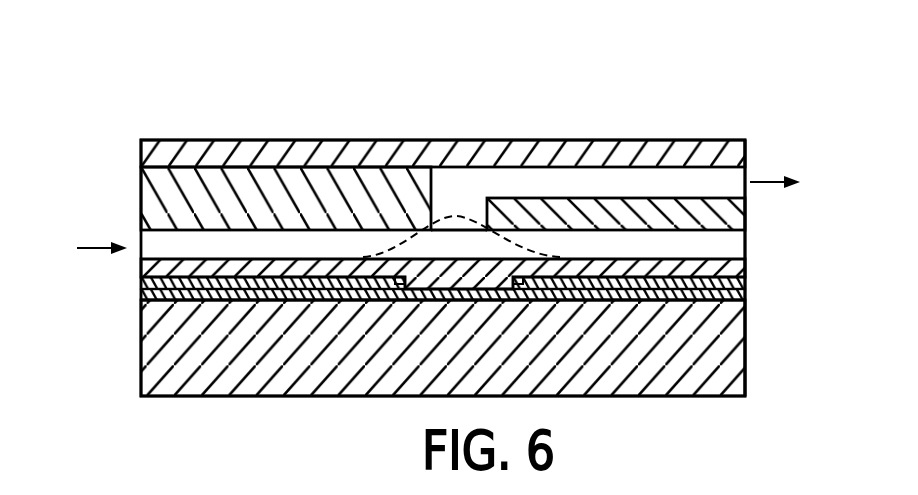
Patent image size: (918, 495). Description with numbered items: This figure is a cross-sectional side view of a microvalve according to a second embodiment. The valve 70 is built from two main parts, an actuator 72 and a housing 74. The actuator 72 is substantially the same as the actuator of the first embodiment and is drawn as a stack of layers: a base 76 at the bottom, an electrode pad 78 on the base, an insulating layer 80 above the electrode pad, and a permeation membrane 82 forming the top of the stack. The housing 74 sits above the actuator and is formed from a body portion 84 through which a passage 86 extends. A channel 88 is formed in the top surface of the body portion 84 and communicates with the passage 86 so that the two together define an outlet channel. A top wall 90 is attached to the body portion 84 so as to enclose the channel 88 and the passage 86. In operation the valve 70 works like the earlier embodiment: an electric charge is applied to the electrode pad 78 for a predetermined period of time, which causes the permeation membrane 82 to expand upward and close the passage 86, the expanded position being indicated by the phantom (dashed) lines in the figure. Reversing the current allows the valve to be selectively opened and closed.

The valve 70 is at (660, 94).
The actuator 72 is at (772, 303).
The housing 74 is at (757, 130).
The base 76 is at (725, 342).
The electrode pad 78 is at (141, 296).
The insulating layer 80 is at (141, 287).
The permeation membrane 82 is at (723, 268).
The body portion 84 is at (141, 206).
The passage 86 is at (446, 208).
The channel 88 is at (580, 188).
The top wall 90 is at (141, 157).